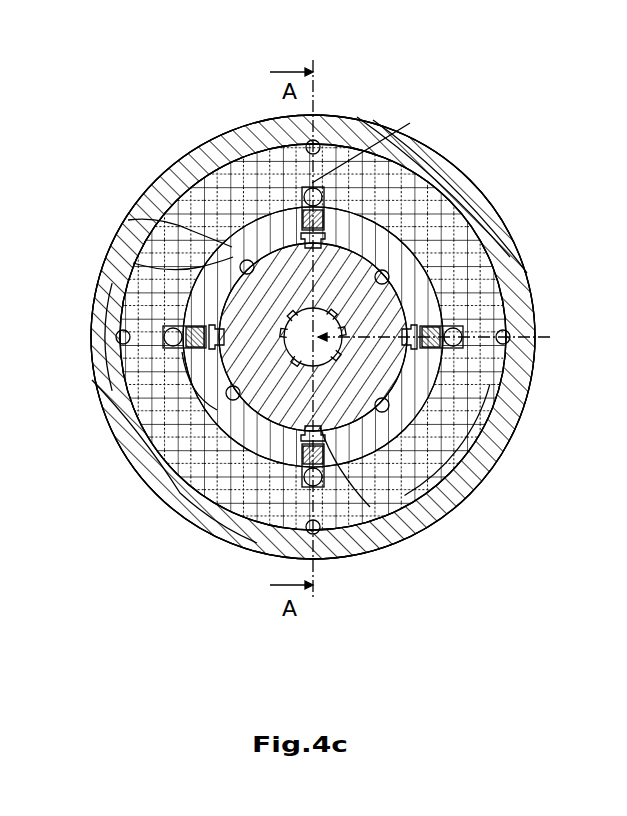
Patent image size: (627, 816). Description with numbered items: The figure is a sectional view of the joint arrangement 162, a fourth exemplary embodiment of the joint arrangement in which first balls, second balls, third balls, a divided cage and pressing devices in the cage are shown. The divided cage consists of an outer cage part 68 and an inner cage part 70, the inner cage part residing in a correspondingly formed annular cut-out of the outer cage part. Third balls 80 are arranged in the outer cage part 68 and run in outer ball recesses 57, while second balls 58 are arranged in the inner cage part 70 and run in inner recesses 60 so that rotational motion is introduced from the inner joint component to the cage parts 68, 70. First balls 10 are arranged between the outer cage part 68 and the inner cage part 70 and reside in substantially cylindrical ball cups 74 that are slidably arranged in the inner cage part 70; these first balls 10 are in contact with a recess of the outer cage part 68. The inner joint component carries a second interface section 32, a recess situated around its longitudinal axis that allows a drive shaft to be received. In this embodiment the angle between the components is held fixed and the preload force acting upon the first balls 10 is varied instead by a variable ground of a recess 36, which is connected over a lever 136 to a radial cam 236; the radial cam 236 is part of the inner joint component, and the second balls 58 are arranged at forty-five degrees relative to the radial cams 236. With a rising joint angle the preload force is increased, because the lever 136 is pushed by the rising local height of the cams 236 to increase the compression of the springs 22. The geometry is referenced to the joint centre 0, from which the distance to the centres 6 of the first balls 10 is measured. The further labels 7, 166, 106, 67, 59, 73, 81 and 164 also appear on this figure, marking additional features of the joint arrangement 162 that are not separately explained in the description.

The joint arrangement 162 is at (116, 92).
The third balls 80 is at (276, 118).
The outer ball recesses 57 is at (318, 114).
The first balls 10 is at (314, 205).
The winding 166 is at (373, 120).
The recess 36 is at (408, 142).
The pole 106 is at (452, 248).
The rotor 7 is at (485, 225).
The pin 67 is at (480, 303).
The centres of first balls 6 is at (506, 398).
The radial cam 236 is at (430, 510).
The lever 136 is at (363, 547).
The joint centre 0 is at (250, 547).
The second interface section 32 is at (190, 515).
The inner recesses 60 is at (135, 452).
The roller 59 is at (112, 428).
The springs 22 is at (100, 385).
The bolt 73 is at (110, 350).
The ball cups 74 is at (100, 338).
The outer shell 81 is at (93, 328).
The coil side 164 is at (115, 253).
The outer cage part 68 is at (130, 233).
The inner cage part 70 is at (233, 247).
The second balls 58 is at (247, 262).